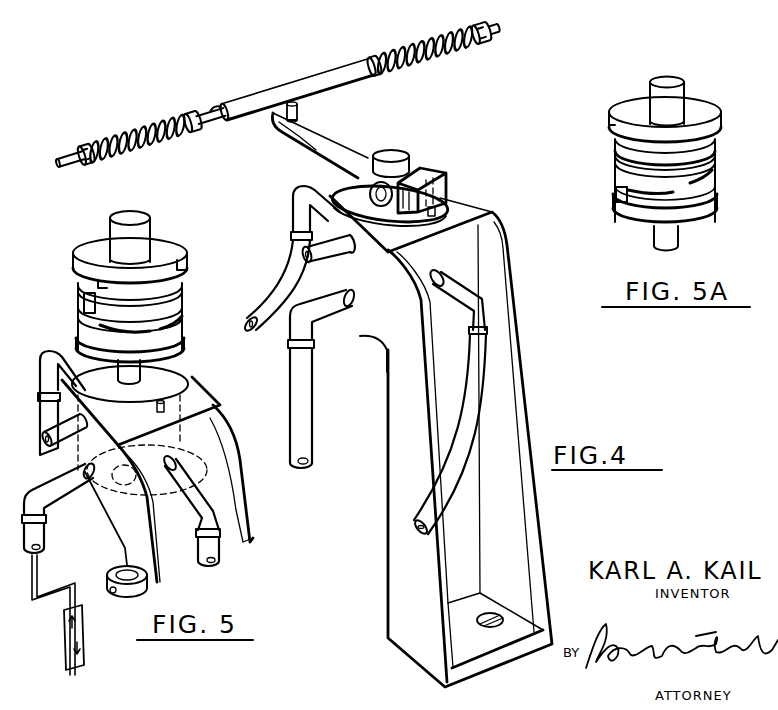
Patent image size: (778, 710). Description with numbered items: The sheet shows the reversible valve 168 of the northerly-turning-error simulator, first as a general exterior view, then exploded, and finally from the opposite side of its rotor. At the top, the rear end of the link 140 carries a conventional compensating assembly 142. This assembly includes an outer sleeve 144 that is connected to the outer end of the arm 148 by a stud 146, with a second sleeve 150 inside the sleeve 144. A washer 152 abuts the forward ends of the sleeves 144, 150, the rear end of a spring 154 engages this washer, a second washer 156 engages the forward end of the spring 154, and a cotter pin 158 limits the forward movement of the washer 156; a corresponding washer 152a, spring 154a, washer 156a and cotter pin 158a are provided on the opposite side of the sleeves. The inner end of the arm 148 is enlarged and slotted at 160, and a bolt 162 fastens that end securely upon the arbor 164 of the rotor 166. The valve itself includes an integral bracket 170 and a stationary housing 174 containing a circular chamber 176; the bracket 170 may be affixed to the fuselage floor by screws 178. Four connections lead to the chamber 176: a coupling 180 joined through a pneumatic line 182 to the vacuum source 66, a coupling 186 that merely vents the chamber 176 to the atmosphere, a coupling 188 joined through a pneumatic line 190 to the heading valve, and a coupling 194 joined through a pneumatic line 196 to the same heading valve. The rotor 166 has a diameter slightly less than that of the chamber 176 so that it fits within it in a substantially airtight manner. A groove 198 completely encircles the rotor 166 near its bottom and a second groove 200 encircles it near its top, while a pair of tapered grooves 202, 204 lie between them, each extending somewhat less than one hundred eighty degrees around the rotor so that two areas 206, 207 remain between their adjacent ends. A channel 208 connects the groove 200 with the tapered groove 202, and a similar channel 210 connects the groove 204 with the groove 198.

In FIG. 5, the vacuum source 66 is at (83, 631).
In FIG. 4, the link 140 is at (58, 162).
In FIG. 4, the compensating assembly 142 is at (254, 75).
In FIG. 4, the outer sleeve 144 is at (296, 86).
In FIG. 4, the stud 146 is at (300, 107).
In FIG. 4, the arm 148 is at (343, 136).
In FIG. 4, the second sleeve 150 is at (204, 121).
In FIG. 4, the washer 152 is at (195, 127).
In FIG. 4, the washer 152a is at (372, 58).
In FIG. 4, the spring 154 is at (119, 132).
In FIG. 4, the spring 154a is at (430, 56).
In FIG. 4, the second washer 156 is at (86, 148).
In FIG. 4, the washer 156a is at (488, 40).
In FIG. 4, the cotter pin 158 is at (84, 160).
In FIG. 4, the cotter pin 158a is at (486, 24).
In FIG. 4, the slot 160 is at (438, 170).
In FIG. 4, the bolt 162 is at (372, 193).
In FIG. 4, the arbor 164 is at (399, 157).
In FIG. 5, the arbor 164 is at (141, 232).
In FIG. 5A, the arbor 164 is at (675, 98).
In FIG. 4, the rotor 166 is at (366, 221).
In FIG. 5, the rotor 166 is at (173, 306).
In FIG. 5A, the rotor 166 is at (616, 160).
In FIG. 5, the reversible valve 168 is at (200, 318).
In FIG. 4, the bracket 170 is at (397, 583).
In FIG. 4, the stationary housing 174 is at (378, 326).
In FIG. 5, the stationary housing 174 is at (212, 406).
In FIG. 5, the circular chamber 176 is at (174, 388).
In FIG. 4, the screws 178 is at (492, 624).
In FIG. 4, the coupling 180 is at (314, 313).
In FIG. 5, the coupling 180 is at (50, 490).
In FIG. 4, the pneumatic line 182 is at (304, 375).
In FIG. 5, the pneumatic line 182 is at (45, 546).
In FIG. 4, the coupling 186 is at (302, 251).
In FIG. 5, the coupling 186 is at (40, 448).
In FIG. 4, the coupling 188 is at (303, 196).
In FIG. 5, the coupling 188 is at (49, 356).
In FIG. 4, the pneumatic line 190 is at (283, 287).
In FIG. 5, the pneumatic line 190 is at (33, 401).
In FIG. 4, the coupling 194 is at (453, 290).
In FIG. 5, the coupling 194 is at (185, 481).
In FIG. 4, the pneumatic line 196 is at (430, 513).
In FIG. 5, the pneumatic line 196 is at (220, 553).
In FIG. 5, the groove 198 is at (170, 355).
In FIG. 5A, the groove 198 is at (643, 211).
In FIG. 5, the second groove 200 is at (184, 265).
In FIG. 5A, the second groove 200 is at (716, 157).
In FIG. 5, the tapered groove 202 is at (83, 318).
In FIG. 5A, the tapered groove 202 is at (716, 177).
In FIG. 5, the tapered groove 204 is at (182, 312).
In FIG. 5A, the tapered groove 204 is at (618, 177).
In FIG. 5, the area 206 is at (174, 333).
In FIG. 5A, the area 207 is at (698, 204).
In FIG. 5, the channel 208 is at (84, 298).
In FIG. 5A, the channel 210 is at (616, 194).